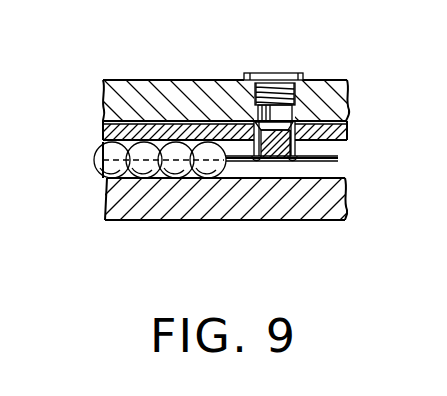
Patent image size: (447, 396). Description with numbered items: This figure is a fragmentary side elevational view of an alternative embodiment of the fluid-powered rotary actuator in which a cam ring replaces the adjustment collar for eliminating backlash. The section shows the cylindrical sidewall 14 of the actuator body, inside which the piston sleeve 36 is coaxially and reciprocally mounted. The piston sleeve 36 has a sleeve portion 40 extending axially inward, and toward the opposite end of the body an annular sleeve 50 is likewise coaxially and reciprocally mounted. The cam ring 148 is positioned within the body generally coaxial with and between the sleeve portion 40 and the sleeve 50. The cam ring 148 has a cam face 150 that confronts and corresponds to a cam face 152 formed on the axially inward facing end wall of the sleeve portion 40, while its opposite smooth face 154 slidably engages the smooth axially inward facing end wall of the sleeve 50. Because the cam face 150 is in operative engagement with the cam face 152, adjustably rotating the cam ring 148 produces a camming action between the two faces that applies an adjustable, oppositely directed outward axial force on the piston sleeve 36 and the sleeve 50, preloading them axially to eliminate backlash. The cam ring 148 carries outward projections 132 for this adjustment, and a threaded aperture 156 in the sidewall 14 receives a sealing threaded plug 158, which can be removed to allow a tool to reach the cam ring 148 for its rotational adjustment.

The cylindrical sidewall 14 is at (159, 90).
The sleeve portion 40 is at (200, 127).
The piston sleeve 36 is at (102, 133).
The annular sleeve 50 is at (349, 129).
The threaded aperture 156 is at (270, 117).
The sealing threaded plug 158 is at (273, 88).
The outward projections 132 is at (292, 120).
The cam ring 148 is at (273, 160).
The cam face 150 is at (257, 160).
The cam face 152 is at (245, 160).
The smooth face 154 is at (303, 161).